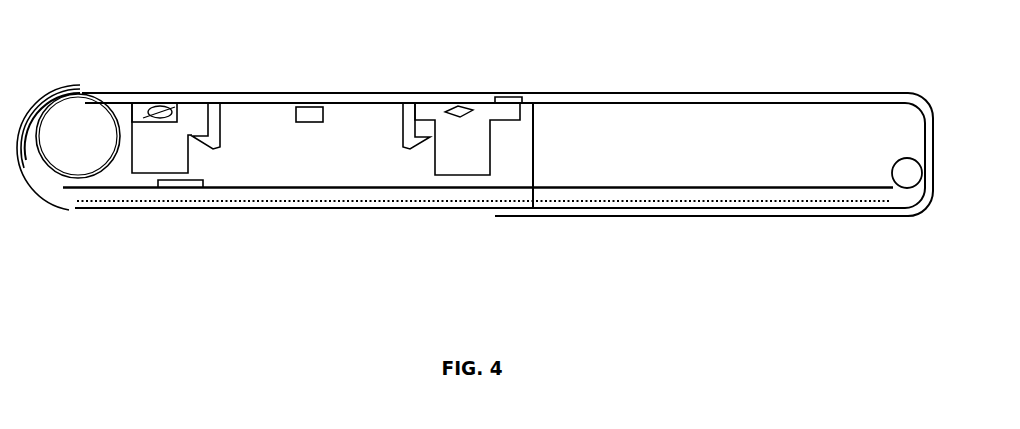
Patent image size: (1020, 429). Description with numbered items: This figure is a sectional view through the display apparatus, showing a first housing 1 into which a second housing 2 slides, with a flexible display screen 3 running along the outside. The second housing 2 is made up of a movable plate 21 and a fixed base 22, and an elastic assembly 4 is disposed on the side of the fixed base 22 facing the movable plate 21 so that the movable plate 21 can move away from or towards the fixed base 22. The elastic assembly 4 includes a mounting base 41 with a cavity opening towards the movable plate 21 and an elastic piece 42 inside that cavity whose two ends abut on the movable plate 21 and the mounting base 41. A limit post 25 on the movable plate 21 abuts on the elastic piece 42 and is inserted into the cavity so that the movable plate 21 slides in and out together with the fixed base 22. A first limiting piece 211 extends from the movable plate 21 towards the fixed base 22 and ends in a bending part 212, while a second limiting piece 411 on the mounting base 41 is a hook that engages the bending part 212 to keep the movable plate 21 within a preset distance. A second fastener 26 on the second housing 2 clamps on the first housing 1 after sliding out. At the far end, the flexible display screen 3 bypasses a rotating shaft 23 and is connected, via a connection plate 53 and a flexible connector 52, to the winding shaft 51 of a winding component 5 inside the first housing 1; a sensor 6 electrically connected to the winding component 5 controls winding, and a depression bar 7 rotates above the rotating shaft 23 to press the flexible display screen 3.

The first housing 1 is at (843, 102).
The second housing 2 is at (528, 43).
The flexible display screen 3 is at (785, 92).
The elastic assembly 4 is at (415, 243).
The winding component 5 is at (803, 255).
The sensor 6 is at (318, 123).
The depression bar 7 is at (46, 97).
The movable plate 21 is at (309, 104).
The fixed base 22 is at (240, 207).
The rotating shaft 23 is at (78, 135).
The limit post 25 is at (157, 108).
The second fastener 26 is at (512, 107).
The mounting base 41 is at (455, 150).
The elastic piece 42 is at (472, 110).
The winding shaft 51 is at (906, 175).
The flexible connector 52 is at (845, 188).
The connection plate 53 is at (180, 184).
The first limiting piece 211 is at (215, 147).
The bending part 212 is at (199, 140).
The second limiting piece 411 is at (418, 128).